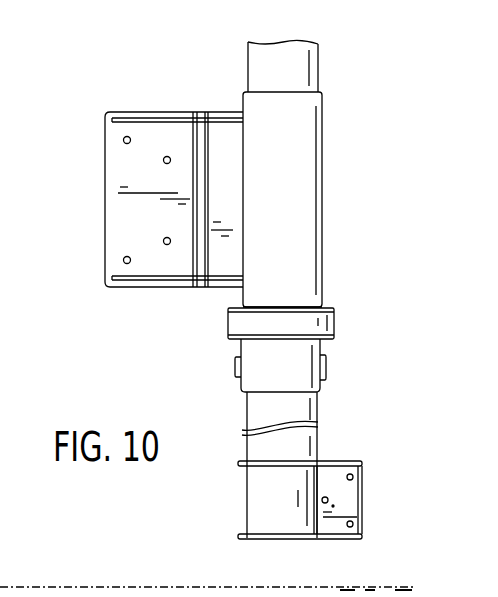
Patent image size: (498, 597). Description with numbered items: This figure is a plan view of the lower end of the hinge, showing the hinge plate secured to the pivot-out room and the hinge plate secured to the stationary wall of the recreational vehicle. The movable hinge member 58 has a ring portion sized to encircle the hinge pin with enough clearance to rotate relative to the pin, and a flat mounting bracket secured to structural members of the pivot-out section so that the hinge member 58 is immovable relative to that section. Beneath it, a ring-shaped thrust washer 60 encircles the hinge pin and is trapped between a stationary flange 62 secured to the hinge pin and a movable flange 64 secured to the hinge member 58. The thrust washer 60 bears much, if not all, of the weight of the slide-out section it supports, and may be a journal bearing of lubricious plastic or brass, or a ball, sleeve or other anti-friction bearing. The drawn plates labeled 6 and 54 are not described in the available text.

The mounting plate 6 is at (174, 130).
The lower bracket 54 is at (348, 498).
The movable hinge member 58 is at (325, 167).
The thrust washer 60 is at (241, 322).
The stationary flange 62 is at (333, 342).
The movable flange 64 is at (323, 308).